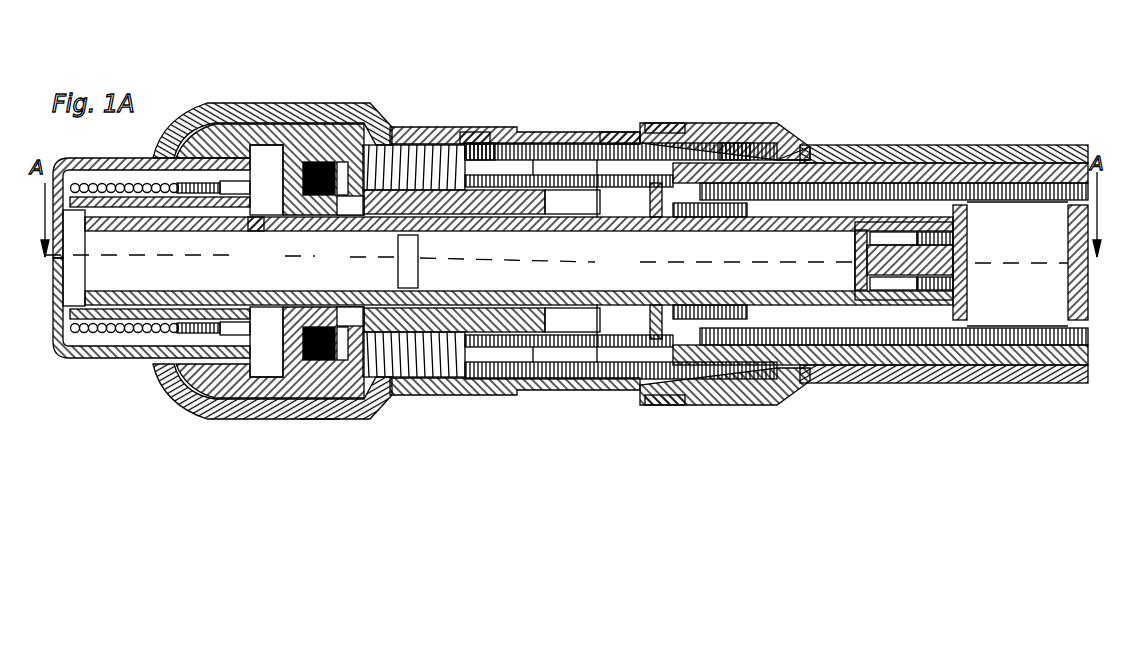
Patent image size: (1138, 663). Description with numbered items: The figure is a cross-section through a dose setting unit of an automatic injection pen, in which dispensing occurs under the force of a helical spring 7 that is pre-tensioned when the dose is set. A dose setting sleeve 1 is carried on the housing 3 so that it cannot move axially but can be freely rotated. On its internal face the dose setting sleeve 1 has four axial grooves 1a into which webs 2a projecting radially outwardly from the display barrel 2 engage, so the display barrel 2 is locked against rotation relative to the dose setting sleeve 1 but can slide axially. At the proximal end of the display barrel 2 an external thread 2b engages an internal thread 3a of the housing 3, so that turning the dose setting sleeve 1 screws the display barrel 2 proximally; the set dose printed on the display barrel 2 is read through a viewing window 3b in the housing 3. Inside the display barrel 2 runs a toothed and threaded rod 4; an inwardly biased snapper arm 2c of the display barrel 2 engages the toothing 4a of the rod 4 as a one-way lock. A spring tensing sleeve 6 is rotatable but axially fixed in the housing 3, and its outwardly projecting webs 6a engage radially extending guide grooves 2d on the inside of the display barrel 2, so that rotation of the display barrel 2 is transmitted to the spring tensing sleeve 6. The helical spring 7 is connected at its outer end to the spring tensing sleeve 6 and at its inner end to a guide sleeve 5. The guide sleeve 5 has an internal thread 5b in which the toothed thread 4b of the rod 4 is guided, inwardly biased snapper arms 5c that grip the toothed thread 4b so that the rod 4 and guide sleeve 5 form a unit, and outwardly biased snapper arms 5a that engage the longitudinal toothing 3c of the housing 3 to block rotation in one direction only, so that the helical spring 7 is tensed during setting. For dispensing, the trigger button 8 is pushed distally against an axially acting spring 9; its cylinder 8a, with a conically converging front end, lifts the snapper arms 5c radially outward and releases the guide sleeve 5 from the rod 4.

The dose setting sleeve 1 is at (713, 123).
The grooves 1a is at (662, 123).
The display barrel 2 is at (555, 143).
The webs 2a is at (770, 130).
The external thread 2b is at (480, 143).
The snapper arm 2c is at (732, 143).
The guide grooves 2d is at (602, 290).
The housing 3 is at (378, 127).
The internal thread 3a is at (470, 132).
The viewing window 3b is at (590, 128).
The longitudinal toothing 3c is at (322, 421).
The toothed and/or threaded rod 4 is at (555, 401).
The toothing 4a is at (815, 150).
The toothed thread 4b is at (256, 232).
The guide sleeve 5 is at (290, 123).
The snapper arms 5a is at (295, 420).
The internal thread 5b is at (322, 232).
The snapper arms 5c is at (270, 103).
The spring tensing sleeve 6 is at (435, 401).
The webs 6a is at (525, 175).
The helical spring 7 is at (332, 410).
The trigger button 8 is at (112, 361).
The cylinder 8a is at (150, 361).
The spring 9 is at (87, 361).